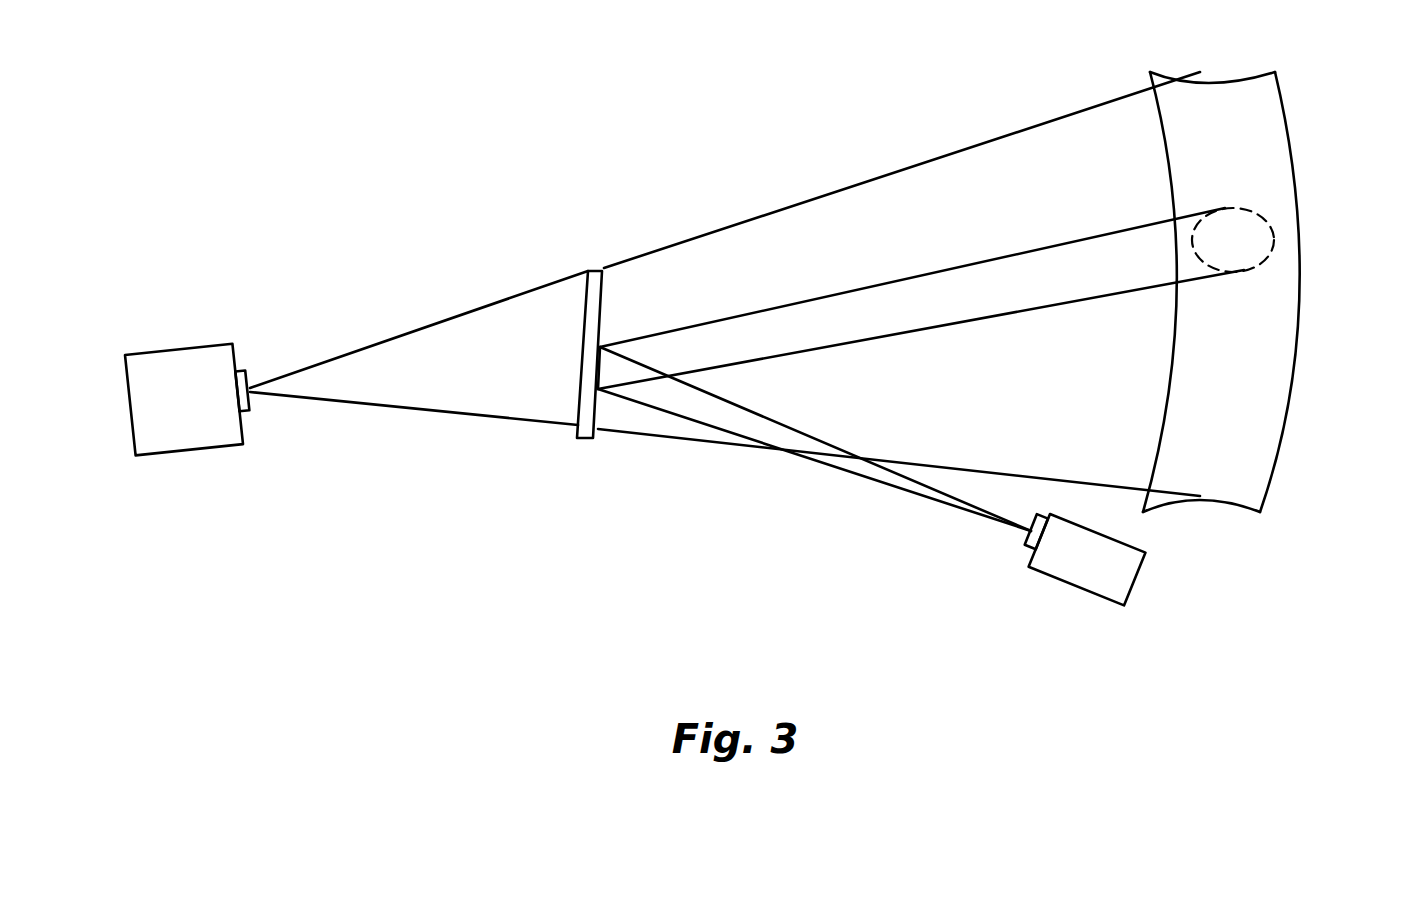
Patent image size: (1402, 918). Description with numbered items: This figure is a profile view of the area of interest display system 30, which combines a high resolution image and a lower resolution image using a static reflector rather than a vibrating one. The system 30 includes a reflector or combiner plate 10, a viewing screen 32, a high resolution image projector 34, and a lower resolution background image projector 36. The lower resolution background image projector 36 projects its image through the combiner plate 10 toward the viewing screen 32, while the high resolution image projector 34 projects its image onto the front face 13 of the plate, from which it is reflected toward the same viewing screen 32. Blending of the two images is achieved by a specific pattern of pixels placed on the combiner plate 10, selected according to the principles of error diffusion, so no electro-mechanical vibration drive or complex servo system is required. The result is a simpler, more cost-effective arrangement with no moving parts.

The reflector or combiner plate 10 is at (585, 355).
The front face 13 is at (603, 365).
The area of interest display system 30 is at (655, 186).
The viewing screen 32 is at (1268, 343).
The high resolution image projector 34 is at (1120, 580).
The lower resolution background image projector 36 is at (192, 425).